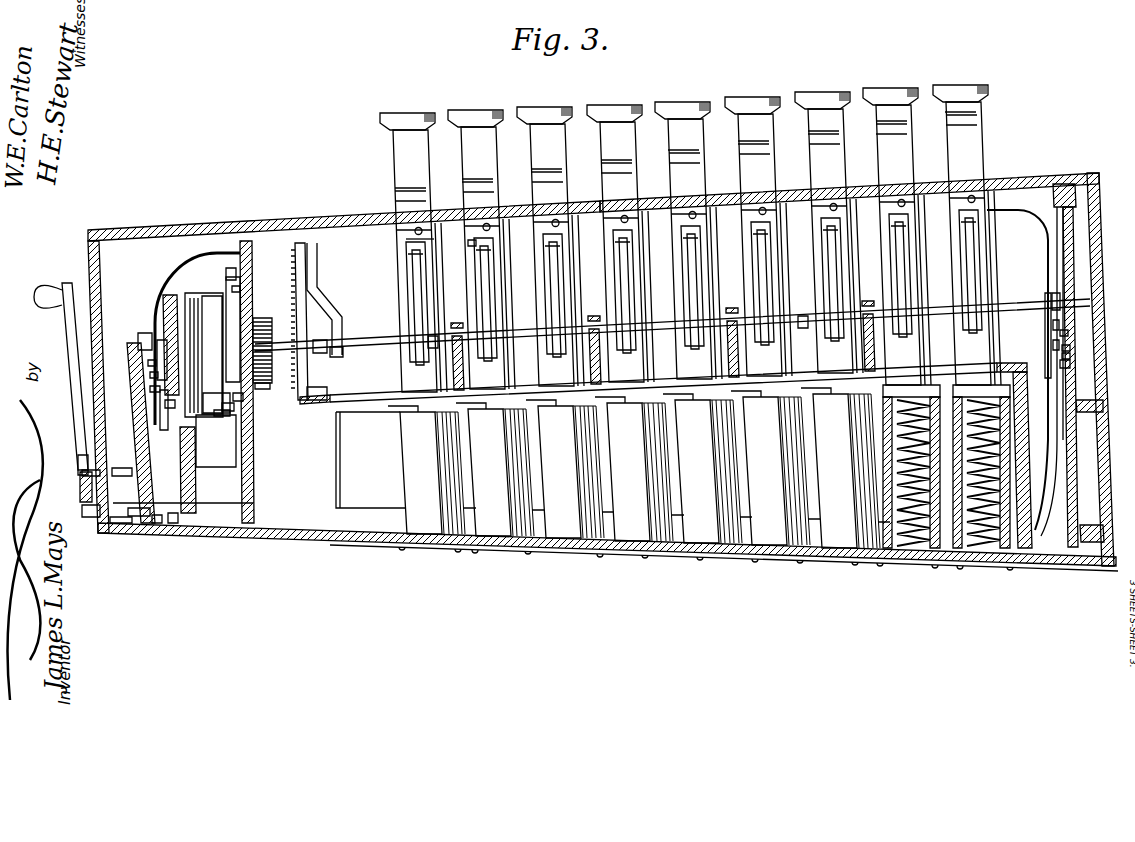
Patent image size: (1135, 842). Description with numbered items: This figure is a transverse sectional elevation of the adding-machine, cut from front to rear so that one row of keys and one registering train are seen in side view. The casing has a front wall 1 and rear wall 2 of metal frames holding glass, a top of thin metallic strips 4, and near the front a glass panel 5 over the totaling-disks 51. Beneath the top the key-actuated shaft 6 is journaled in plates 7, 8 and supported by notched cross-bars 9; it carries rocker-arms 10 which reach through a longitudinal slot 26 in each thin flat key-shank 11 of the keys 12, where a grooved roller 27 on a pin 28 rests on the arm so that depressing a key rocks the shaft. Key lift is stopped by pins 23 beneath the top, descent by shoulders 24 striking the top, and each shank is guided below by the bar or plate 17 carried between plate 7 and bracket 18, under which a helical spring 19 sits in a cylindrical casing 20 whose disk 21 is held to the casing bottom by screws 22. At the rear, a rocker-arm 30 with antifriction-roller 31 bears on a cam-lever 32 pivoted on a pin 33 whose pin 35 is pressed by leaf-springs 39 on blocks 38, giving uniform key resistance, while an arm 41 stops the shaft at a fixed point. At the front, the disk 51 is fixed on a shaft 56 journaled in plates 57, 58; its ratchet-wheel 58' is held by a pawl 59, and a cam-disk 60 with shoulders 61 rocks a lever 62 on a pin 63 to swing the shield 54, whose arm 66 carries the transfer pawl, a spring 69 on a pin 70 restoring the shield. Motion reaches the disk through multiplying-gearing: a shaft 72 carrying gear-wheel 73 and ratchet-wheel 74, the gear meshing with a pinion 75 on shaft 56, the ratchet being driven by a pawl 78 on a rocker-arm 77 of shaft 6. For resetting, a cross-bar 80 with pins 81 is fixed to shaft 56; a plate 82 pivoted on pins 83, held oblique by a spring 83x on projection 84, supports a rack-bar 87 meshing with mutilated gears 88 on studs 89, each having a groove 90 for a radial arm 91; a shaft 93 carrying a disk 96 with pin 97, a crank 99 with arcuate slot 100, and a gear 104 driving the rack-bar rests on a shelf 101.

The front wall 1 is at (88, 258).
The rear wall 2 is at (1097, 262).
The top strips 4 is at (1036, 176).
The glass panel 5 is at (158, 235).
The shafts 6 is at (382, 348).
The plate 7 is at (338, 480).
The plate 8 is at (1063, 448).
The cross-bars 9 is at (598, 386).
The rocker-arms 10 is at (645, 295).
The key-shanks 11 is at (840, 177).
The keys 12 is at (950, 92).
The bar or plate 17 is at (999, 362).
The bracket 18 is at (1028, 433).
The springs 19 is at (995, 552).
The cylindrical casing 20 is at (772, 537).
The disk or plate 21 is at (876, 563).
The screws 22 is at (950, 566).
The pins 23 is at (624, 224).
The shoulders 24 is at (820, 137).
The longitudinal slot 26 is at (808, 283).
The grooved roller 27 is at (435, 247).
The pin 28 is at (410, 253).
The rocker-arm 30 is at (1052, 325).
The antifriction-roller 31 is at (1048, 378).
The cam-lever 32 is at (1052, 345).
The pin 33 is at (1068, 333).
The pin 35 is at (1070, 347).
The blocks 38 is at (1070, 364).
The leaf-springs 39 is at (1070, 356).
The arm 41 is at (1052, 296).
The totaling-disks 51 is at (232, 414).
The shields 54 is at (204, 296).
The shaft 56 is at (158, 312).
The plate 57 is at (166, 300).
The plate 58 is at (257, 382).
The ratchet-wheel 58' is at (217, 418).
The pawl 59 is at (216, 441).
The cam-disk 60 is at (240, 318).
The shoulders 61 is at (244, 396).
The lever 62 is at (240, 289).
The pin 63 is at (230, 278).
The arm 66 is at (236, 408).
The spring 69 is at (162, 412).
The pin 70 is at (262, 333).
The shafts 72 is at (265, 362).
The gear-wheel 73 is at (268, 385).
The ratchet-wheel 74 is at (328, 392).
The pinion 75 is at (312, 345).
The rocker-arm 77 is at (318, 296).
The pawl 78 is at (310, 261).
The cross-bar 80 is at (158, 342).
The pins 81 is at (142, 336).
The plate 82 is at (140, 508).
The pins 83 is at (172, 524).
The spring 83x is at (122, 524).
The projection 84 is at (154, 524).
The rack-bar 87 is at (166, 404).
The mutilated gears 88 is at (130, 352).
The studs 89 is at (150, 362).
The groove 90 is at (152, 375).
The arm 91 is at (152, 389).
The shaft 93 is at (124, 466).
The disk 96 is at (80, 455).
The pin 97 is at (82, 472).
The crank 99 is at (68, 330).
The arcuate slot 100 is at (88, 470).
The shelf 101 is at (94, 518).
The gear 104 is at (196, 485).